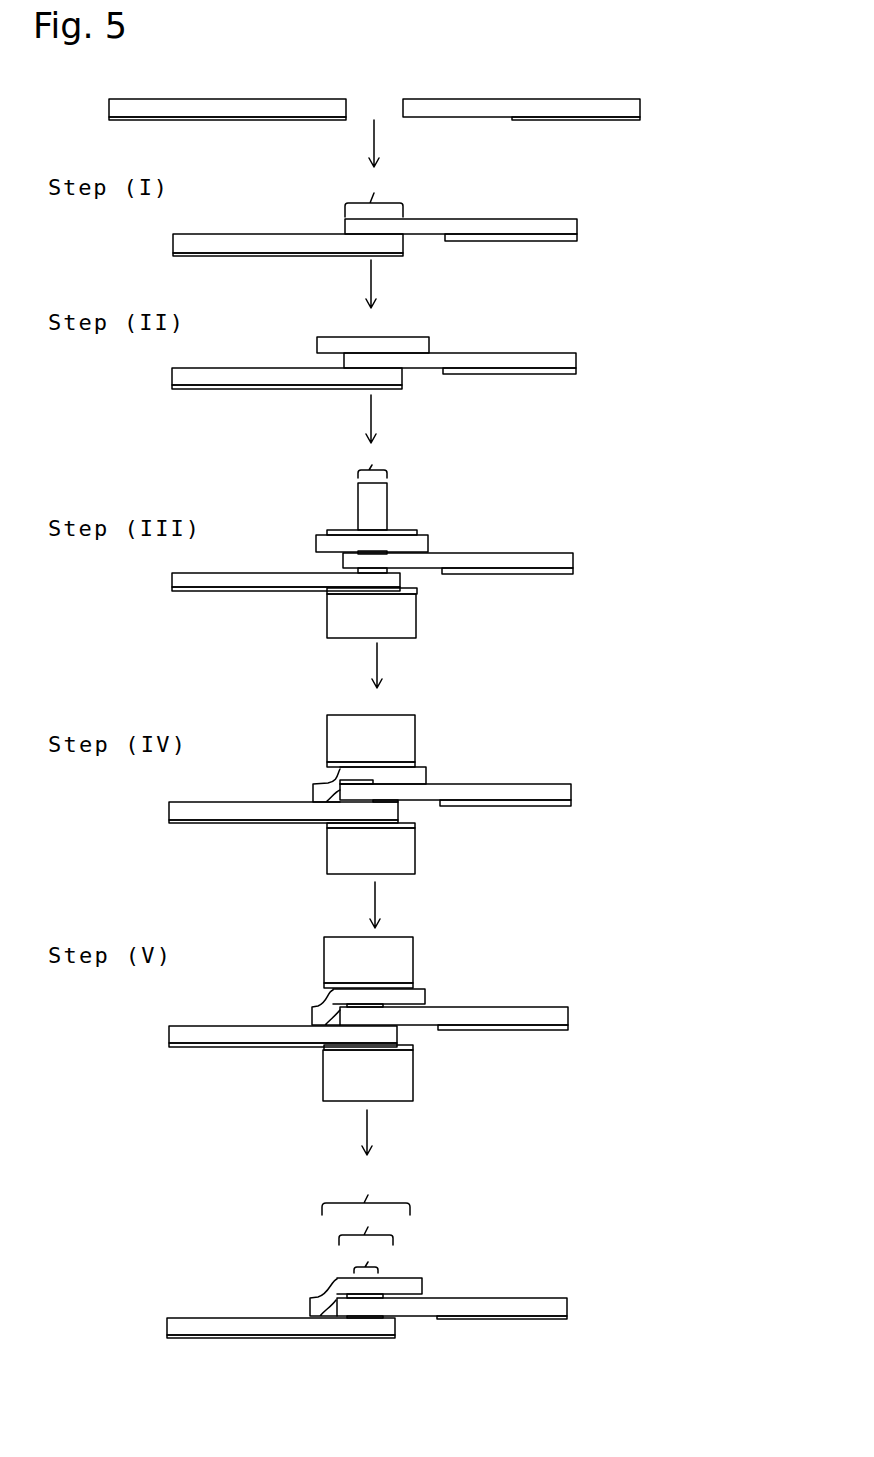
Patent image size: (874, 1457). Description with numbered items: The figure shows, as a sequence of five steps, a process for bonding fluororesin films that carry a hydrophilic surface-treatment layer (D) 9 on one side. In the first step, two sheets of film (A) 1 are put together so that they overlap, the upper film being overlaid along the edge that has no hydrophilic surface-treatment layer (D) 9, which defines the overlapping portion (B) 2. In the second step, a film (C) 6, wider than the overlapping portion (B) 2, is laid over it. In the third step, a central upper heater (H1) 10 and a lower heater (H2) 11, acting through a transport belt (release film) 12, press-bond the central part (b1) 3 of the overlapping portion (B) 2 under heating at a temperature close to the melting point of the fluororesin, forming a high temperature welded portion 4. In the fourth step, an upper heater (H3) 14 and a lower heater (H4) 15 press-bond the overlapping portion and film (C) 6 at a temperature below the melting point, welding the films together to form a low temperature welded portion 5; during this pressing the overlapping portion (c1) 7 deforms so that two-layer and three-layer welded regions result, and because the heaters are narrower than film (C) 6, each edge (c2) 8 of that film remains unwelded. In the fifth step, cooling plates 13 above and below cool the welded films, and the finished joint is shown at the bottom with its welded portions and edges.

The film (A) 1 is at (260, 107).
The overlapping portion (B) 2 is at (371, 707).
The central part (b1) 3 is at (370, 862).
The high temperature welded portion 4 is at (373, 573).
The low temperature welded portion 5 is at (407, 782).
The film (C) 6 is at (344, 343).
The overlapping portion (c1) 7 is at (315, 723).
The edge (c2) 8 is at (317, 1305).
The hydrophilic surface-treatment layer (D) 9 is at (270, 118).
The central upper heater (H1) 10 is at (373, 508).
The lower heater (H2) 11 is at (402, 608).
The transport belt (release film) 12 is at (408, 532).
The cooling plate 13 is at (380, 958).
The upper heater (H3) 14 is at (393, 743).
The lower heater (H4) 15 is at (387, 843).